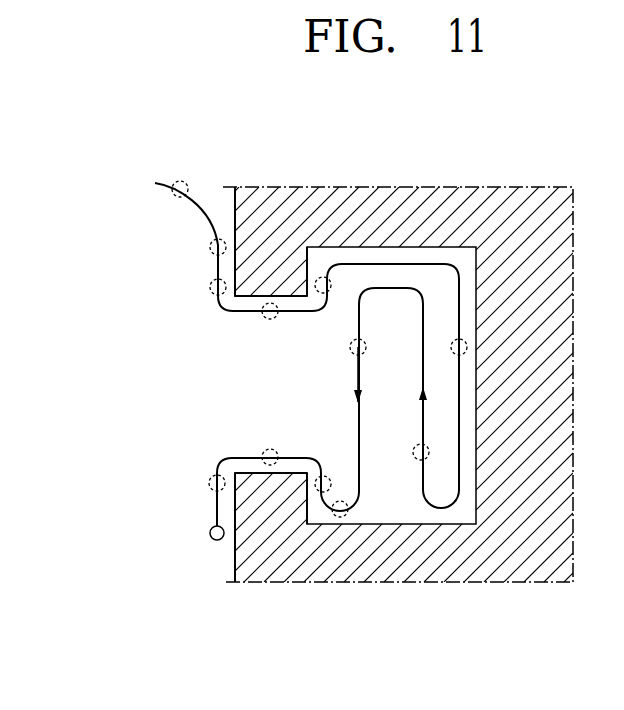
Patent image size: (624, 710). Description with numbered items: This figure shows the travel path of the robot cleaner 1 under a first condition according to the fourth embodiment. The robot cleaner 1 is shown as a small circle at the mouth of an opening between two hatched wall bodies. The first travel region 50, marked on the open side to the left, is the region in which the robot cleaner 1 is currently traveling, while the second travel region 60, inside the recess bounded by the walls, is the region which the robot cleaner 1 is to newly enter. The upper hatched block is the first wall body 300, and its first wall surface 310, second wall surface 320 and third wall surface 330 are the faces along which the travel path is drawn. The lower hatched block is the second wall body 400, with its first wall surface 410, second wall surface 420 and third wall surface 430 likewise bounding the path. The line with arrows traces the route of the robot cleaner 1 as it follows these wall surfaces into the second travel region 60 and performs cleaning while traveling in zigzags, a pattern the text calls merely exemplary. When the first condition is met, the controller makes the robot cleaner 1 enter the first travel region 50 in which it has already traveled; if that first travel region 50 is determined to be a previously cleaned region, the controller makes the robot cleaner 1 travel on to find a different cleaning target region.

The robot cleaner 1 is at (210, 531).
The first travel region 50 is at (125, 408).
The second travel region 60 is at (380, 385).
The first wall body 300 is at (340, 130).
The first wall surface 310 is at (237, 273).
The second wall surface 320 is at (273, 296).
The third wall surface 330 is at (307, 272).
The second wall body 400 is at (342, 640).
The first wall surface 410 is at (306, 498).
The second wall surface 420 is at (272, 473).
The third wall surface 430 is at (235, 497).